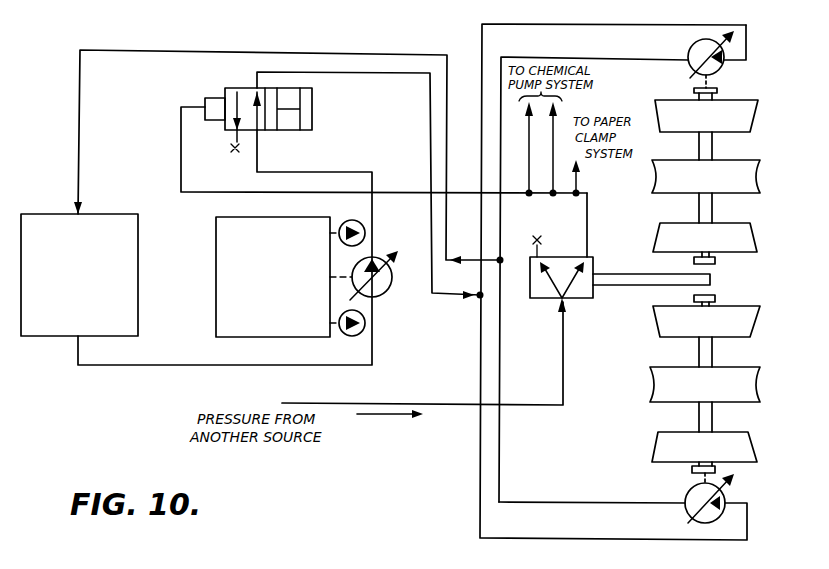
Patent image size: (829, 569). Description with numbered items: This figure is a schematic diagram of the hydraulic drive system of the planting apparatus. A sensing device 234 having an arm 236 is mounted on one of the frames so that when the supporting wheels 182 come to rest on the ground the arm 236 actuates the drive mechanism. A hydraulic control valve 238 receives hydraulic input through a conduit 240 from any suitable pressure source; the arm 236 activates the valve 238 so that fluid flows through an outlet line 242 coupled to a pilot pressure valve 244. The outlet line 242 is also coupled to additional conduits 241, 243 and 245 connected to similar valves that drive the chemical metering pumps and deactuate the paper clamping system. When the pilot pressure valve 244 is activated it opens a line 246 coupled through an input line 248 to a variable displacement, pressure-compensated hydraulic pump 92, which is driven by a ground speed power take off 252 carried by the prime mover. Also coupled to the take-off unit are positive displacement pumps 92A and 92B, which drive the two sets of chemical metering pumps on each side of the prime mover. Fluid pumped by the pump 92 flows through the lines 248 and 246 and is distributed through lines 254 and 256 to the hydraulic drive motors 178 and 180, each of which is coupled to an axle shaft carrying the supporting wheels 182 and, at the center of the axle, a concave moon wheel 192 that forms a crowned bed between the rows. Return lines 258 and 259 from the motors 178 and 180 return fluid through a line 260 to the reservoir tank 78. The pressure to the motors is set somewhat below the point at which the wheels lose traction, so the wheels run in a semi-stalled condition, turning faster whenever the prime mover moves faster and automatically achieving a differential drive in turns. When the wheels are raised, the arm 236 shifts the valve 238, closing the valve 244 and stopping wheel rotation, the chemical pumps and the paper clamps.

The reservoir tank 78 is at (31, 212).
The variable displacement, pressure-compensated hydraulic pump 92 is at (386, 293).
The positive displacement pump 92A is at (353, 219).
The positive displacement pump 92B is at (350, 336).
The hydraulic drive motor 178 is at (700, 513).
The hydraulic drive motor 180 is at (735, 67).
The supporting wheels 182 is at (751, 125).
The moon wheel 192 is at (760, 180).
The sensing device 234 is at (597, 265).
The arm 236 is at (711, 279).
The hydraulic control valve 238 is at (578, 300).
The conduit 240 is at (562, 405).
The conduit 241 is at (527, 178).
The outlet line 242 is at (390, 199).
The conduit 243 is at (560, 119).
The pilot pressure valve 244 is at (312, 104).
The conduit 245 is at (586, 187).
The line 246 is at (257, 72).
The input line 248 is at (316, 172).
The ground speed power take off 252 is at (216, 289).
The line 254 is at (747, 41).
The line 256 is at (480, 511).
The return line 258 is at (600, 478).
The return line 259 is at (628, 57).
The line 260 is at (80, 63).